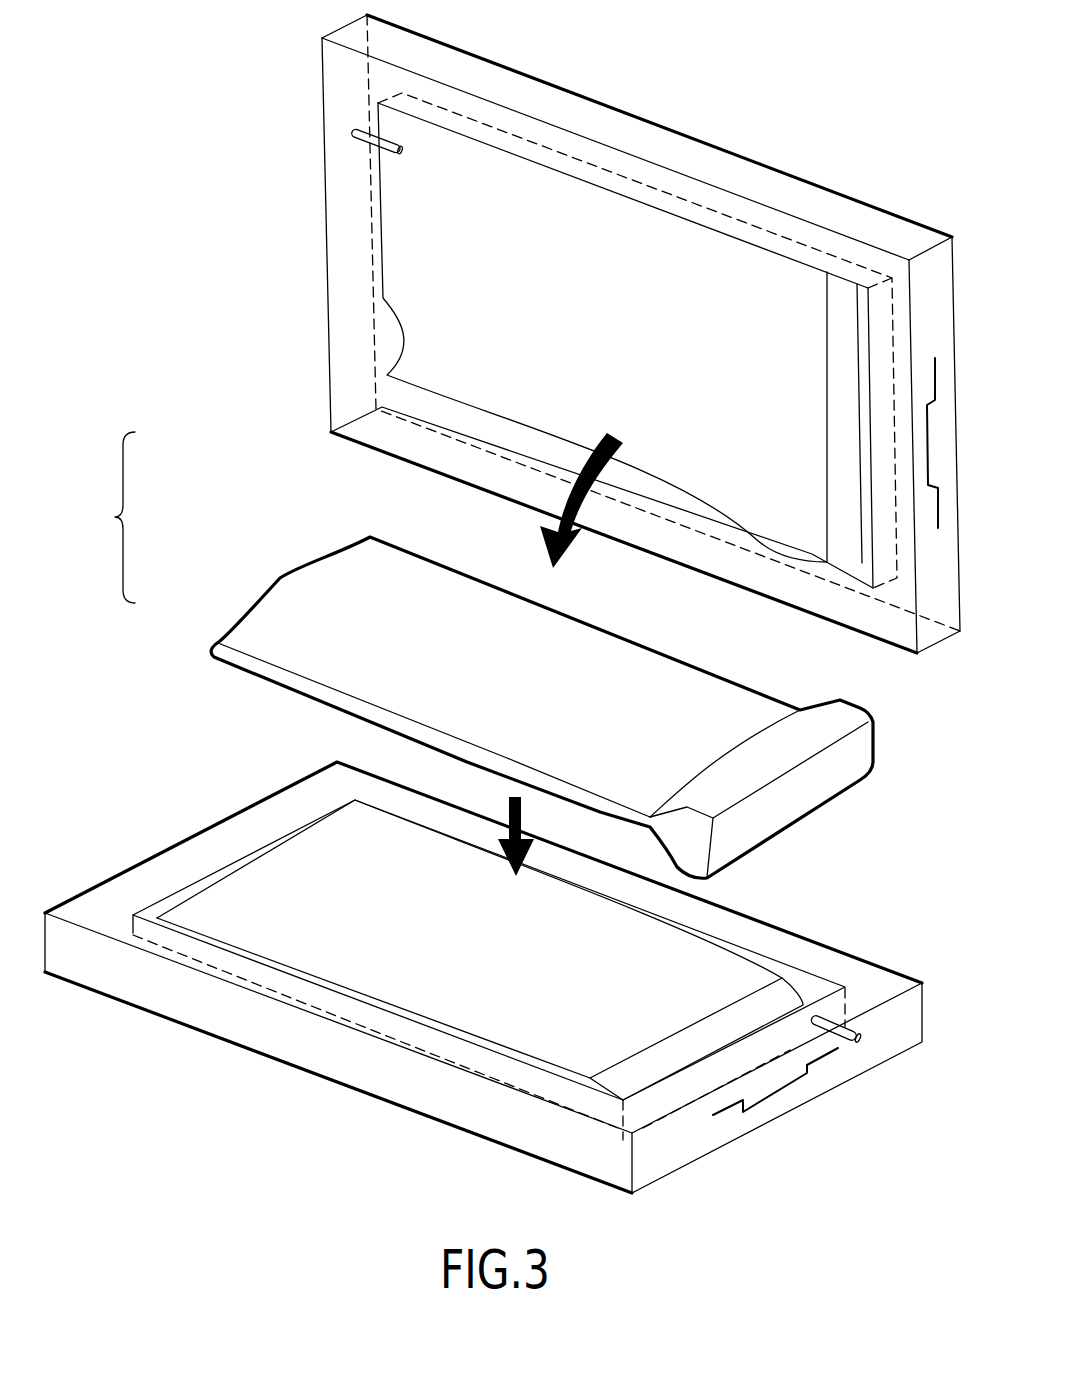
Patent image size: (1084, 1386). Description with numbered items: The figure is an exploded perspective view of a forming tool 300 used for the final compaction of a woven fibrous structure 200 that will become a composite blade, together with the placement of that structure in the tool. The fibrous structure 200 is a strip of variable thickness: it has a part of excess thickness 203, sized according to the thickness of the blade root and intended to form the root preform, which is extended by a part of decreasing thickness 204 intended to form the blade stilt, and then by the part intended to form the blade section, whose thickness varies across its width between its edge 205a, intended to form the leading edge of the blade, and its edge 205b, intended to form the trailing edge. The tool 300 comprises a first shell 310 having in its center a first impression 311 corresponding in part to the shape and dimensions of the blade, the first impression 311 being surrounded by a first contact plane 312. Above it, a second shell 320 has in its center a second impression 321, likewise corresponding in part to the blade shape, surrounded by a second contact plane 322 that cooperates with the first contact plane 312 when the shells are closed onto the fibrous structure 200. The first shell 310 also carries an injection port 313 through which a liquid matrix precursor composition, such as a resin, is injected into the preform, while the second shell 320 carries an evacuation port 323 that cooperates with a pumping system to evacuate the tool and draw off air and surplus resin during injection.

The forming tool 300 is at (103, 517).
The first shell 310 is at (188, 829).
The first impression 311 is at (287, 893).
The first contact plane 312 is at (95, 900).
The injection port 313 is at (855, 1043).
The second shell 320 is at (321, 390).
The second impression 321 is at (417, 272).
The second contact plane 322 is at (347, 70).
The evacuation port 323 is at (360, 137).
The fibrous structure 200 is at (307, 559).
The part of excess thickness 203 is at (693, 838).
The part of decreasing thickness 204 is at (650, 826).
The leading edge 205a is at (262, 668).
The trailing edge 205b is at (662, 649).